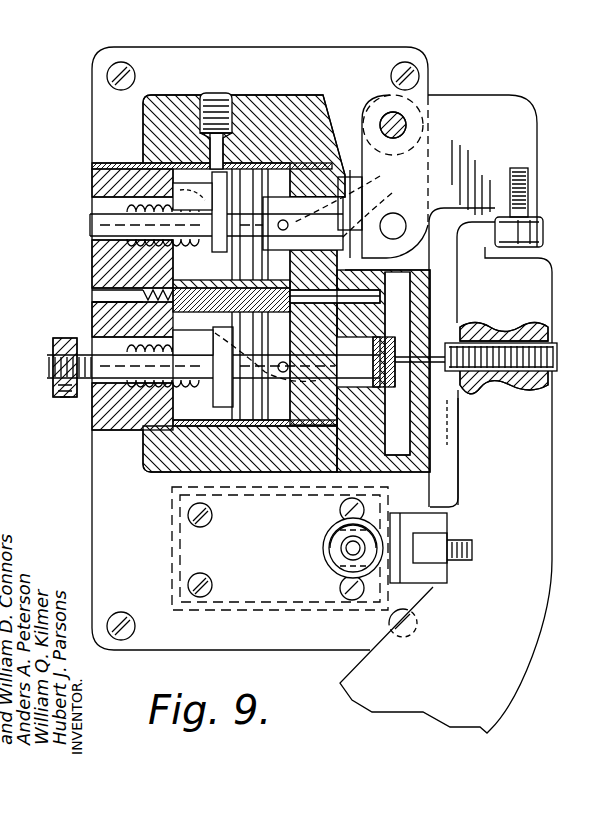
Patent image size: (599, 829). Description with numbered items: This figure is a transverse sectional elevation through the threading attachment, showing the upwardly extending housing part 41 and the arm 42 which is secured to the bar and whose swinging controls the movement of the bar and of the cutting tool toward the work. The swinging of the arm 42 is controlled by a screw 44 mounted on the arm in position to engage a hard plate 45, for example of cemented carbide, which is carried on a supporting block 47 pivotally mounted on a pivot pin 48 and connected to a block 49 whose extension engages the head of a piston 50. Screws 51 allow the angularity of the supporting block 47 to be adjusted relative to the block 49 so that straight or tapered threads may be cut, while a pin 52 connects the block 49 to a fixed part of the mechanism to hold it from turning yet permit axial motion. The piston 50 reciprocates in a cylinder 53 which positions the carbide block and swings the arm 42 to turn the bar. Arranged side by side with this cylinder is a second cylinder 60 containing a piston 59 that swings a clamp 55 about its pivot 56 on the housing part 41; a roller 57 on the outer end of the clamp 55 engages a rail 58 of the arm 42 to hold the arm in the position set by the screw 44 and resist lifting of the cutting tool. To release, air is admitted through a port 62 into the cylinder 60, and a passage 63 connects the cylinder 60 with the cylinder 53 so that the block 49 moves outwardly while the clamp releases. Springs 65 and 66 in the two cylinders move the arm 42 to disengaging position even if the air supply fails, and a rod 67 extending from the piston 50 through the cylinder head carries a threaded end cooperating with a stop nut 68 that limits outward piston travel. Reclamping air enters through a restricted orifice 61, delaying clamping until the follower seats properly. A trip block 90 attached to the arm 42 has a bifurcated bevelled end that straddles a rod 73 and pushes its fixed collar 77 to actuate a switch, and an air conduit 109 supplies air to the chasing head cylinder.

The housing part 41 is at (494, 44).
The arm 42 is at (545, 662).
The screw 44 is at (557, 357).
The hard plate 45 is at (447, 395).
The supporting block 47 is at (455, 418).
The pivot pin 48 is at (458, 458).
The block 49 is at (452, 440).
The piston 50 is at (370, 350).
The screws 51 is at (395, 382).
The pin 52 is at (438, 290).
The cylinder 53 is at (238, 472).
The clamp 55 is at (495, 95).
The pivot 56 is at (388, 118).
The roller 57 is at (548, 230).
The rail 58 is at (476, 215).
The piston 59 is at (283, 225).
The cylinder 60 is at (268, 168).
The restricted orifice 61 is at (352, 205).
The port 62 is at (130, 172).
The passage 63 is at (92, 296).
The spring 65 is at (140, 178).
The spring 66 is at (145, 340).
The rod 67 is at (47, 366).
The stop nut 68 is at (52, 392).
The rod 73 is at (342, 546).
The collar 77 is at (334, 565).
The trip block 90 is at (447, 522).
The air conduit 109 is at (300, 268).